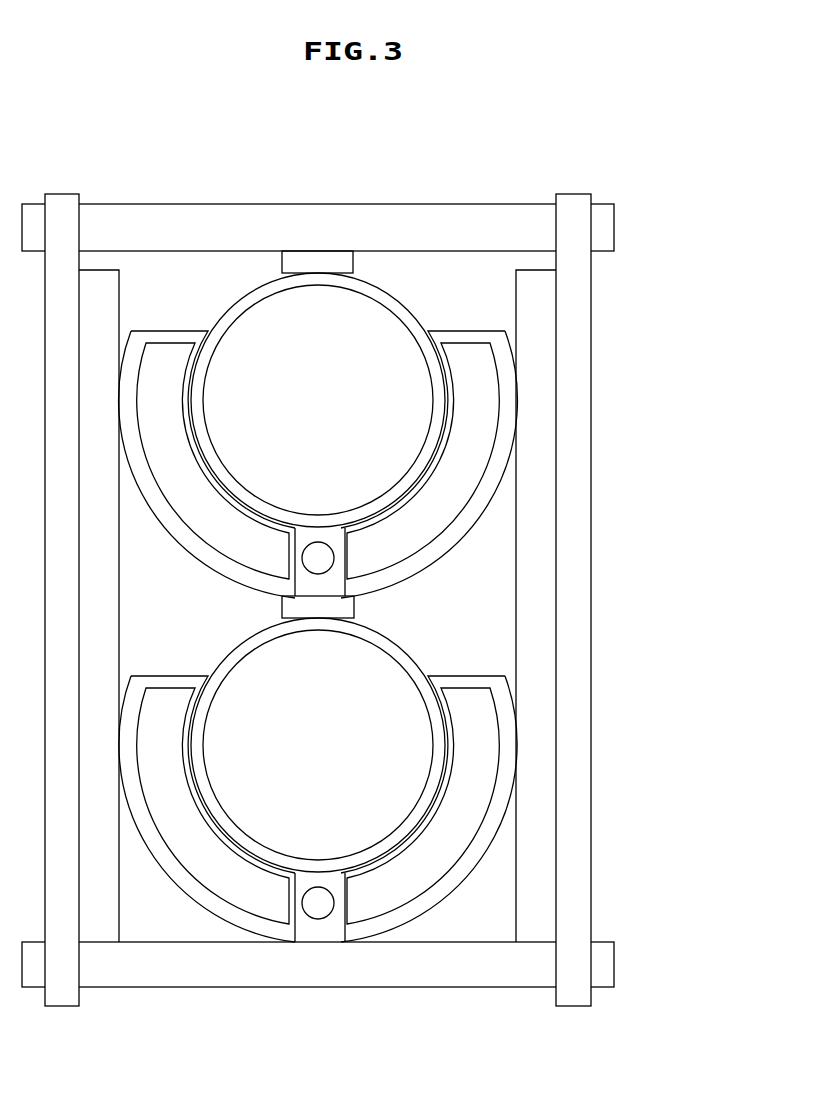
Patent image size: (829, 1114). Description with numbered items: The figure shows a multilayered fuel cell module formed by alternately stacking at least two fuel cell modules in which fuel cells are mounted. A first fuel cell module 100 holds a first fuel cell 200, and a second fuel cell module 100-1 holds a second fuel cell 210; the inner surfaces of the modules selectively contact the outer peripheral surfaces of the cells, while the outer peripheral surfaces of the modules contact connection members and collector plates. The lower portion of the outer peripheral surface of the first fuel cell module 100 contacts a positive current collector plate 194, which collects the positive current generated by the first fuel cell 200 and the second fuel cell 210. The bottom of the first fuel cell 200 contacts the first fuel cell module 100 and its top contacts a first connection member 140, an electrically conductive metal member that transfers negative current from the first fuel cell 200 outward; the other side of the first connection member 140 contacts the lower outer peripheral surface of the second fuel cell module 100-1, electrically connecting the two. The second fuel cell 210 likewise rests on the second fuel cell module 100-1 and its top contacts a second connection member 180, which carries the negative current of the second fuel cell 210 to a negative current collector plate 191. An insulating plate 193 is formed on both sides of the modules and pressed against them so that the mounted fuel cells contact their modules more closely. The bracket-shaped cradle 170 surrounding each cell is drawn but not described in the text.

The first fuel cell module 100 is at (397, 780).
The second fuel cell module 100-1 is at (408, 377).
The first connection member 140 is at (345, 608).
The cradle bracket 170 is at (492, 523).
The second connection member 180 is at (316, 262).
The negative current collector plate 191 is at (462, 219).
The insulating plate 193 is at (106, 921).
The positive current collector plate 194 is at (182, 975).
The first fuel cell 200 is at (345, 760).
The second fuel cell 210 is at (345, 410).